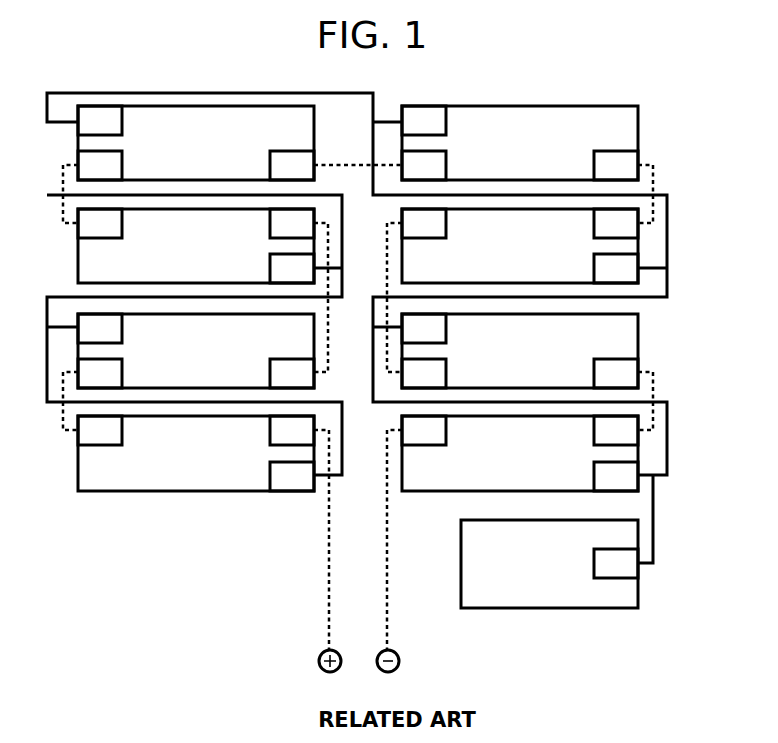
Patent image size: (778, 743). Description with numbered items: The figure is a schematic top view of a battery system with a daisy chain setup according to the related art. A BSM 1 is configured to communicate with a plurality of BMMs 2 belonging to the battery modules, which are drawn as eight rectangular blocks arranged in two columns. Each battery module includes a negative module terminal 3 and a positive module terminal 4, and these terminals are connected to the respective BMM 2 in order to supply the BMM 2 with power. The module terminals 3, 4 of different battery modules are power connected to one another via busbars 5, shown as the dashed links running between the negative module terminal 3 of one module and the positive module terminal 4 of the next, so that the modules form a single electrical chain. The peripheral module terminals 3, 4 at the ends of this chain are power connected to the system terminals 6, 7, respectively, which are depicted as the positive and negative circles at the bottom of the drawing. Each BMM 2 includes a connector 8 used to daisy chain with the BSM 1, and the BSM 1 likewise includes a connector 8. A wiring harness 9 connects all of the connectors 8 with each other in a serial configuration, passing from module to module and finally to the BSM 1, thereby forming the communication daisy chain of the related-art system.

The BSM 1 is at (542, 575).
The BMM 2 is at (189, 154).
The negative module terminal 3 is at (285, 177).
The positive module terminal 4 is at (93, 177).
The busbar 5 is at (653, 183).
The system terminal 6 is at (322, 652).
The system terminal 7 is at (397, 652).
The connector 8 is at (93, 132).
The wiring harness 9 is at (668, 430).